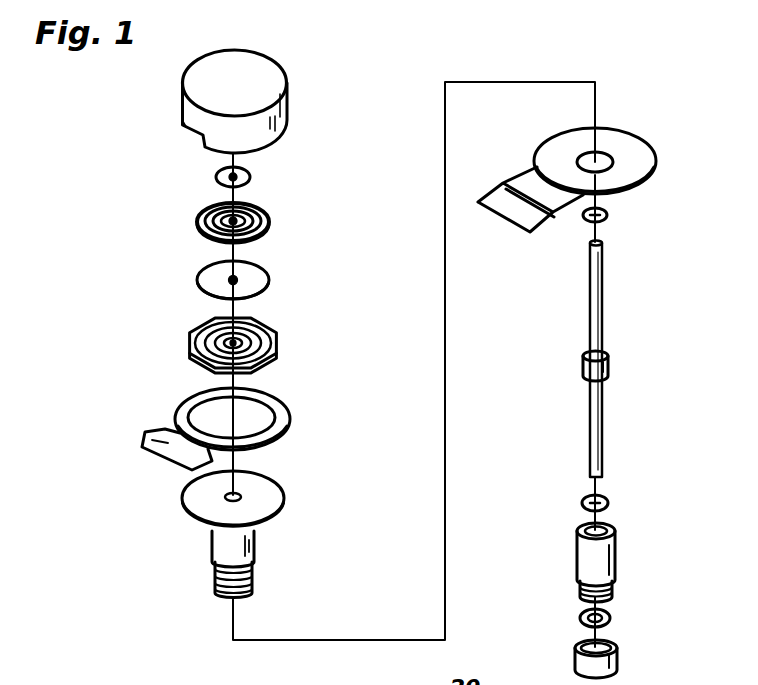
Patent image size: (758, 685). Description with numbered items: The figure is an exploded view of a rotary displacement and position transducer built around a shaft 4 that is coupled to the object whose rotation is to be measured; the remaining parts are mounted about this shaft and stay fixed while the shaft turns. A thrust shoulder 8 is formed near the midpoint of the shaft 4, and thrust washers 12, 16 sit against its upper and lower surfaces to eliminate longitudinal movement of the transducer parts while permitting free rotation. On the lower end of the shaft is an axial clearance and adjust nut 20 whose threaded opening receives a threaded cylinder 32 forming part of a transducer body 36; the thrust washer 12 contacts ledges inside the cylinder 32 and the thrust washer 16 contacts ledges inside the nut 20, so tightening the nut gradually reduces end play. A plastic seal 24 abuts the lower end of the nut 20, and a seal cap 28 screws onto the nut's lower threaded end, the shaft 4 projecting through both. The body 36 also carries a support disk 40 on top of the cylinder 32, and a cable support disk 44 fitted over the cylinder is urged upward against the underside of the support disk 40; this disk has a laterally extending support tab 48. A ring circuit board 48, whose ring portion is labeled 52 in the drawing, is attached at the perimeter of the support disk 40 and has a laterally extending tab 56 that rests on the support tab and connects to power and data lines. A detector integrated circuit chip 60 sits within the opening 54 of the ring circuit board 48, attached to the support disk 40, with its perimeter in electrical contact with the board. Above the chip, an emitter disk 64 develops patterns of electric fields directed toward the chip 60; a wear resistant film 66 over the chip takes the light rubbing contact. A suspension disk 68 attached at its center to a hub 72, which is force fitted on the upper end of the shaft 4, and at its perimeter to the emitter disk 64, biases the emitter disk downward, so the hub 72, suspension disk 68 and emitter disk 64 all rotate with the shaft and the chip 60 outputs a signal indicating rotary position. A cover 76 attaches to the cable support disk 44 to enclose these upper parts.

The shaft 4 is at (602, 307).
The thrust shoulder 8 is at (608, 368).
The thrust washer 12 is at (607, 217).
The thrust washer 16 is at (608, 502).
The axial clearance and adjust nut 20 is at (615, 562).
The plastic seal 24 is at (610, 622).
The seal cap 28 is at (615, 653).
The threaded cylinder 32 is at (255, 543).
The transducer body 36 is at (235, 534).
The support disk 40 is at (185, 502).
The cable support disk 44 is at (657, 153).
The ring circuit board 48 is at (328, 320).
The ring 52 is at (278, 432).
The opening 54 is at (207, 417).
The circuit board tab 56 is at (148, 433).
The detector integrated circuit chip 60 is at (221, 325).
The emitter disk 64 is at (255, 273).
The wear resistant film 66 is at (197, 333).
The suspension disk 68 is at (268, 227).
The hub 72 is at (250, 178).
The cover 76 is at (289, 119).